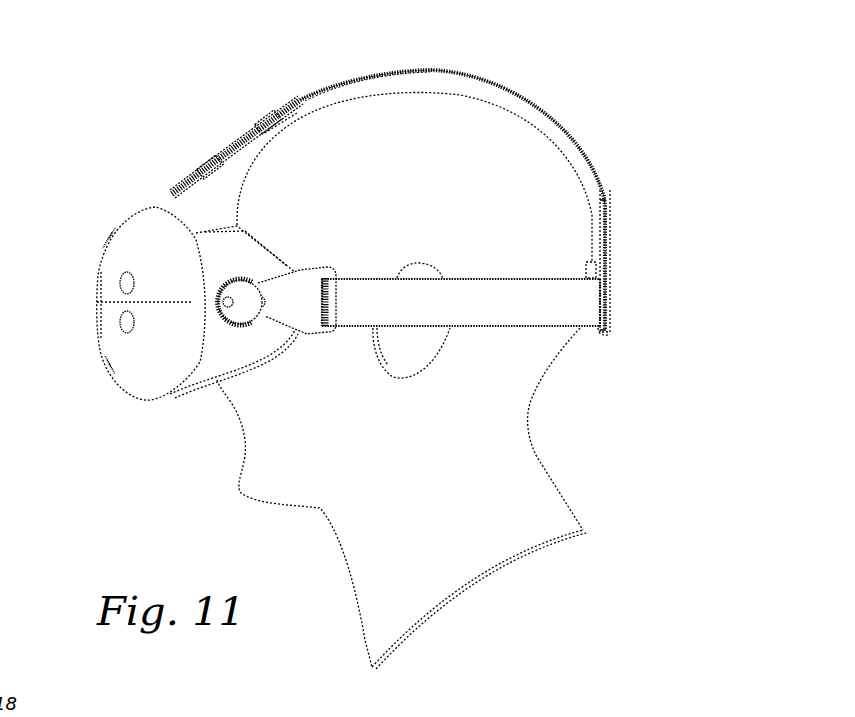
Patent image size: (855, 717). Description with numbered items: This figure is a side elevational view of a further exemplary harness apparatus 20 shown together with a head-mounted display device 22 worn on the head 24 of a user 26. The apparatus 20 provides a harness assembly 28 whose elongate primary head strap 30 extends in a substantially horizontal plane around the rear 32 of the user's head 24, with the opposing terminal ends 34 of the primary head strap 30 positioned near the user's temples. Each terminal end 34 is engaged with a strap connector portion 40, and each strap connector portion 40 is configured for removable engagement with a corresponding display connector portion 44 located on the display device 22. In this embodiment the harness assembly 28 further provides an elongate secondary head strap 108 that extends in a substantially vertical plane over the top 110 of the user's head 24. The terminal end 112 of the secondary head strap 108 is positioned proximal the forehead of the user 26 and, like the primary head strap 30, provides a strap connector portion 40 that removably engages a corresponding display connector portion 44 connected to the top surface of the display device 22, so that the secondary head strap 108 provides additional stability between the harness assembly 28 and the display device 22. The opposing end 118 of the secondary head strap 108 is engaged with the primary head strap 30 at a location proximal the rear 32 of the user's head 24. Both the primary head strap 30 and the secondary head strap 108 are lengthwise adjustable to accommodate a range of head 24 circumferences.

The harness apparatus 20 is at (112, 128).
The head-mounted display device 22 is at (100, 379).
The head 24 is at (560, 186).
The user 26 is at (350, 600).
The harness assembly 28 is at (523, 341).
The primary head strap 30 is at (490, 317).
The rear 32 is at (590, 250).
The terminal ends 34 is at (337, 308).
The strap connector portion 40 is at (230, 136).
The display connector portion 44 is at (238, 343).
The secondary head strap 108 is at (408, 73).
The top 110 is at (455, 97).
The terminal end 112 is at (284, 114).
The opposing end 118 is at (607, 315).